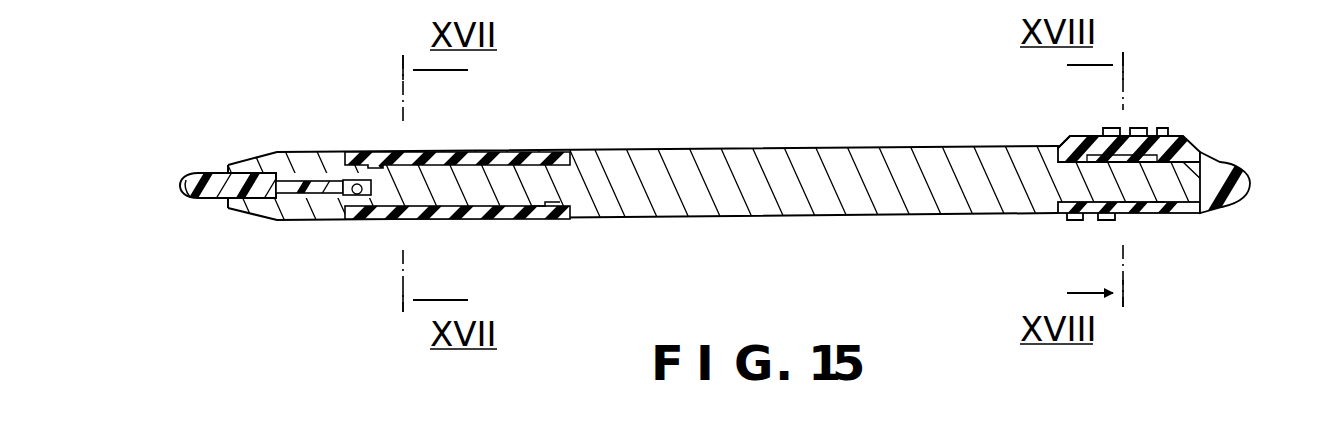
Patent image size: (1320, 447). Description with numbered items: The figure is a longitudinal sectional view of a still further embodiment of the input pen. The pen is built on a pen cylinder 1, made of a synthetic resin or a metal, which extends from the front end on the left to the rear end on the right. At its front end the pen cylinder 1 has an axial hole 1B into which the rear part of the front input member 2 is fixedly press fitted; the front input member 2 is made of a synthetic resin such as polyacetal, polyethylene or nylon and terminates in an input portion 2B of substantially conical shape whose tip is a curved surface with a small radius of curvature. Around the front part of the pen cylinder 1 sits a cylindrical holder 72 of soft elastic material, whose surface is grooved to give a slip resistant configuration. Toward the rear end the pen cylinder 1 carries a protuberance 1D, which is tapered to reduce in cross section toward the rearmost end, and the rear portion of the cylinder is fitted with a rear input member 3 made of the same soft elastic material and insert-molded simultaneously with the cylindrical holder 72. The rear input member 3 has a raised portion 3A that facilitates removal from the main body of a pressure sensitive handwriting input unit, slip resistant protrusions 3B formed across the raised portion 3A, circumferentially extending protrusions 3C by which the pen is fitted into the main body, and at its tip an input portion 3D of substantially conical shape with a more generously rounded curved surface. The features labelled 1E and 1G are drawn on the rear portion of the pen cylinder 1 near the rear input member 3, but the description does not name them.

The pen cylinder 1 is at (738, 160).
The axial hole 1B is at (357, 194).
The protuberance 1D is at (540, 219).
The thread portion 1E is at (1128, 216).
The groove 1G is at (1158, 216).
The front input member 2 is at (190, 170).
The input portion 2B is at (210, 197).
The rear input member 3 is at (1144, 173).
The raised portion 3A is at (1064, 140).
The slip resistant protrusions 3B is at (1167, 128).
The protrusions 3C is at (1103, 221).
The input portion 3D is at (1241, 190).
The cylindrical holder 72 is at (505, 152).